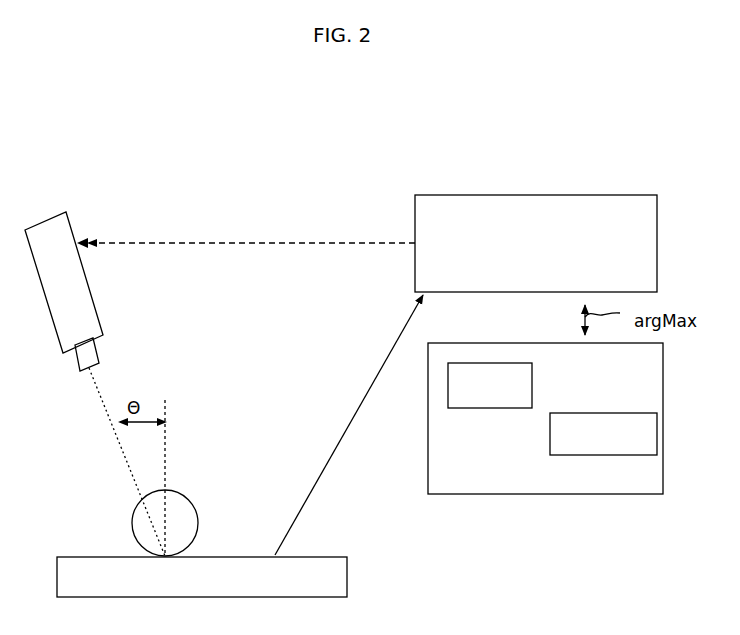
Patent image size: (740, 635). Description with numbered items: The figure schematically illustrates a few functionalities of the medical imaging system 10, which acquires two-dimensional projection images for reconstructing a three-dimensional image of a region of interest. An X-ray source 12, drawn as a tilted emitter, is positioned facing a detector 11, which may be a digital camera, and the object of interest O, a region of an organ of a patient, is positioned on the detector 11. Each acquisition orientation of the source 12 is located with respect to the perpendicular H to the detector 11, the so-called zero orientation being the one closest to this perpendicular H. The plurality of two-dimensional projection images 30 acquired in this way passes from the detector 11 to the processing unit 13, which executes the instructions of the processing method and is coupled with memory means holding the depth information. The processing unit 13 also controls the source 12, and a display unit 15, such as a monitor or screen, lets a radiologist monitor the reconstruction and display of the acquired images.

The medical imaging system 10 is at (397, 167).
The detector 11 is at (347, 560).
The X-ray source 12 is at (100, 307).
The processing unit 13 is at (658, 218).
The display unit 15 is at (663, 392).
The 2D projection images 30 is at (372, 390).
The object of interest O is at (198, 525).
The perpendicular H is at (167, 438).